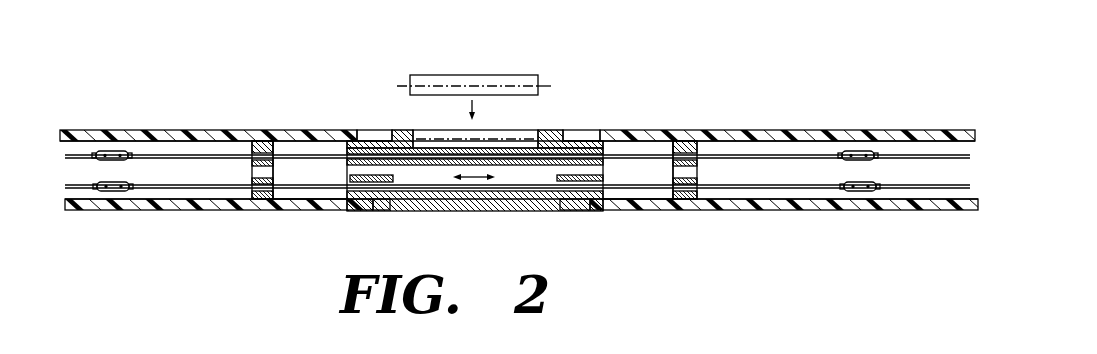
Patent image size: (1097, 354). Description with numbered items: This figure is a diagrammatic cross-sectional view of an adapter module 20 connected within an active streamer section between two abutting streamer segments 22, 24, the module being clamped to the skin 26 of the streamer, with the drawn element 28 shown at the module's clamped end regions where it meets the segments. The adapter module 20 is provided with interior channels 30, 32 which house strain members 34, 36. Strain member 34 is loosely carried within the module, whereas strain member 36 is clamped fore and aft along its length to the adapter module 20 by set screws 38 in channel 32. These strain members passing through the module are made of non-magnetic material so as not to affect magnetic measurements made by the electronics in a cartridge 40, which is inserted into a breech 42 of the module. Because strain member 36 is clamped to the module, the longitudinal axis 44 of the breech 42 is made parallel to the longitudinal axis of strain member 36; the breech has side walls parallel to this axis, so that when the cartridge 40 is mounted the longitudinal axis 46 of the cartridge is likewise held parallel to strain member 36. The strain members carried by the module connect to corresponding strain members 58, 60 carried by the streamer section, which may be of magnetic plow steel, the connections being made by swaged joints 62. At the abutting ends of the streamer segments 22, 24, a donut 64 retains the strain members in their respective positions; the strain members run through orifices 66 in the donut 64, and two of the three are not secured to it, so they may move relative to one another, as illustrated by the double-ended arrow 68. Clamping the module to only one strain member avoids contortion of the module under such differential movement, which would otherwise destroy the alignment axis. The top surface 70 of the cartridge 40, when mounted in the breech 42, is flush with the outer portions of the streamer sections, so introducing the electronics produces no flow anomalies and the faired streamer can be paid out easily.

The adapter module 20 is at (549, 118).
The streamer segment 22 is at (155, 122).
The streamer segment 24 is at (778, 124).
The skin 26 is at (294, 131).
The end plug 28 is at (251, 139).
The interior channel 30 is at (396, 210).
The interior channel 32 is at (350, 130).
The strain member 34 is at (311, 190).
The strain member 36 is at (331, 152).
The set screws 38 is at (349, 177).
The cartridge 40 is at (492, 75).
The breech 42 is at (487, 137).
The longitudinal axis of the breech 44 is at (443, 138).
The longitudinal axis of the cartridge 46 is at (545, 86).
The strain member 58 is at (78, 153).
The strain member 60 is at (77, 190).
The swaged joint 62 is at (112, 151).
The donut 64 is at (266, 141).
The orifices 66 is at (251, 163).
The double-ended arrow 68 is at (470, 179).
The top surface 70 is at (445, 75).